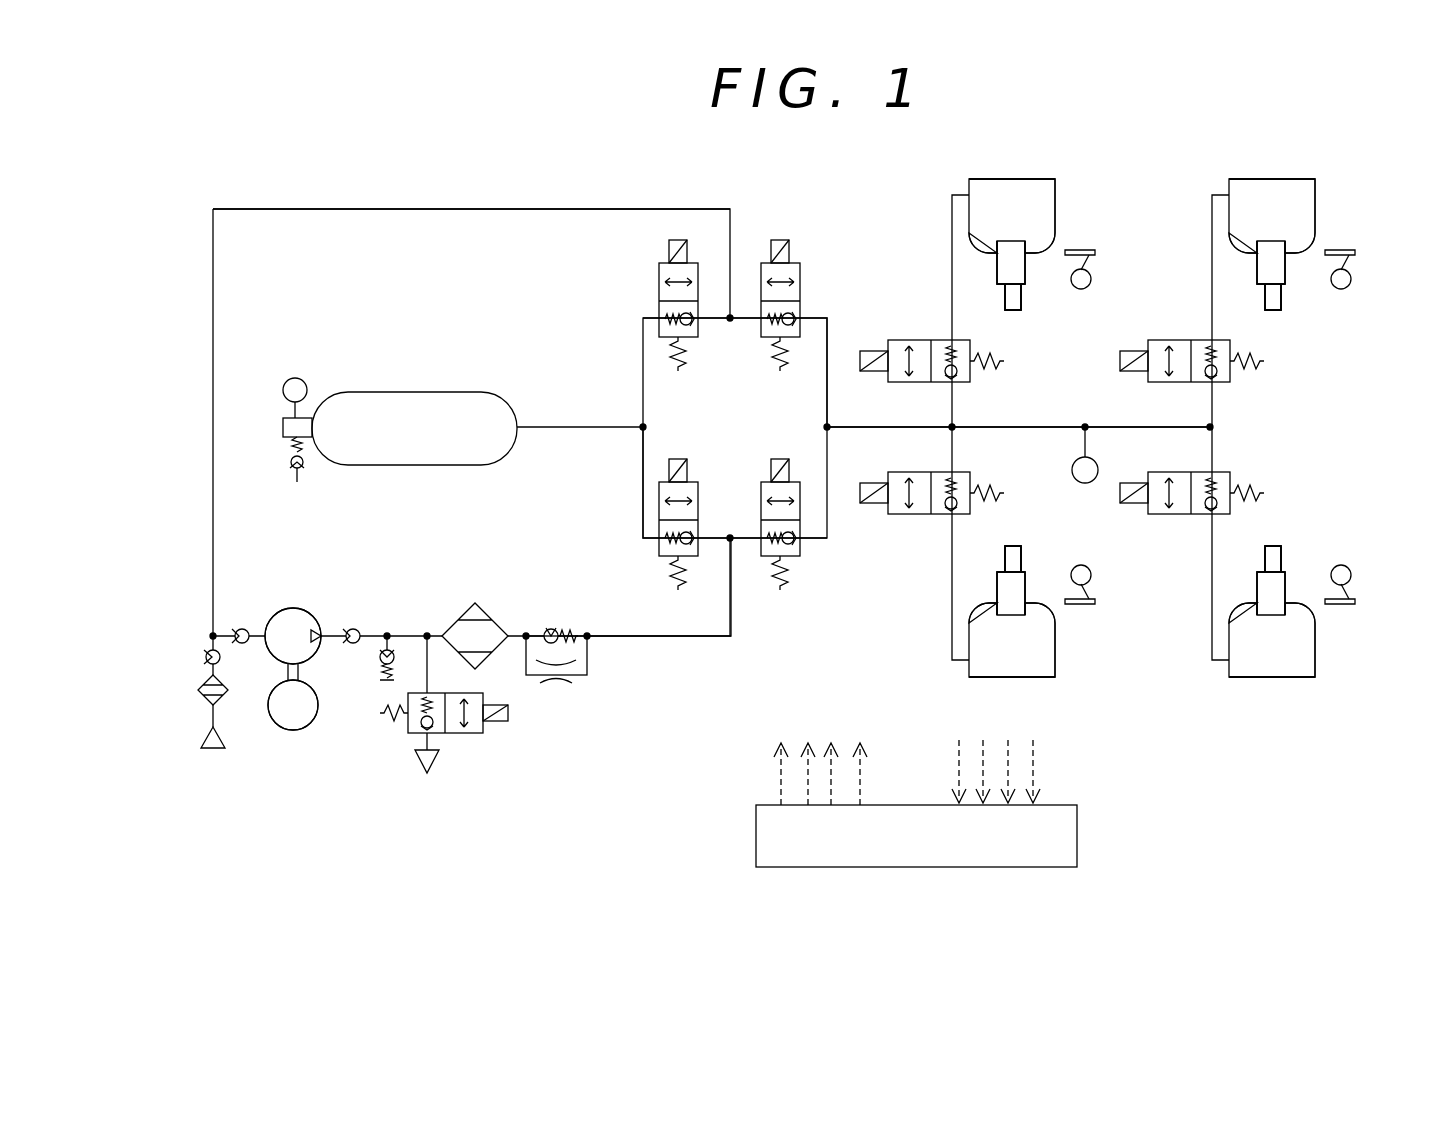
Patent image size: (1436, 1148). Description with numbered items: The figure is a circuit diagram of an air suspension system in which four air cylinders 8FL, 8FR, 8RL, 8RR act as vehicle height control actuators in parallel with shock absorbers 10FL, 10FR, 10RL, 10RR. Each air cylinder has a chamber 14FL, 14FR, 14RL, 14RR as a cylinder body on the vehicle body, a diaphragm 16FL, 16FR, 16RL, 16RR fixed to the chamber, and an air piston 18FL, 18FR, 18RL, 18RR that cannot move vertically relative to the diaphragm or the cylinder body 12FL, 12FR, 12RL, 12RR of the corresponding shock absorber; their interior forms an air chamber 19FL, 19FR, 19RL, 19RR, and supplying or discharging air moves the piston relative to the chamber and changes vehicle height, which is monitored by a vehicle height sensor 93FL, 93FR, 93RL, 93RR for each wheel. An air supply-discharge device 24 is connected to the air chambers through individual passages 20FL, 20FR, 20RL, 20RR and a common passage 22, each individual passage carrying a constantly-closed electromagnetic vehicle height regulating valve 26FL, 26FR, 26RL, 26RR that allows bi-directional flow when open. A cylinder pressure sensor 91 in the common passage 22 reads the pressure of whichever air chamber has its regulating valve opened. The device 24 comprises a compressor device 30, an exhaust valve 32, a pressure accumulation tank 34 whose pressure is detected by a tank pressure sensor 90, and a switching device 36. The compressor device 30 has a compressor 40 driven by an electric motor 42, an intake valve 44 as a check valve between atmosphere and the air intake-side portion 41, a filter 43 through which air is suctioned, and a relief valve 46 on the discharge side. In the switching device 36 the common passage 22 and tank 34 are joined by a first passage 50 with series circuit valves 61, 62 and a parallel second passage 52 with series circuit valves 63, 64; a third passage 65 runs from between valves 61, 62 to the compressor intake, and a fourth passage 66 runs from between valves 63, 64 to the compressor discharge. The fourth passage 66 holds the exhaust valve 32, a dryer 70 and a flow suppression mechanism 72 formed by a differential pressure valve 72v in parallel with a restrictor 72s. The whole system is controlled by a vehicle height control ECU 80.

The air supply-discharge device 24 is at (496, 168).
The third passage 65 is at (607, 209).
The switching device 36 is at (752, 212).
The first passage 50 is at (643, 350).
The second passage 52 is at (643, 490).
The circuit valve 61 is at (659, 270).
The circuit valve 62 is at (800, 277).
The circuit valve 63 is at (698, 490).
The circuit valve 64 is at (800, 487).
The pressure accumulation tank 34 is at (465, 400).
The tank pressure sensor 90 is at (305, 378).
The compressor device 30 is at (287, 580).
The compressor 40 is at (283, 618).
The electric motor 42 is at (283, 718).
The air intake-side portion 41 is at (213, 634).
The intake valve 44 is at (210, 655).
The filter 43 is at (207, 688).
The relief valve 46 is at (385, 663).
The dryer 70 is at (458, 620).
The exhaust valve 32 is at (483, 728).
The flow suppression mechanism 72 is at (540, 620).
The differential pressure valve 72v is at (553, 628).
The restrictor 72s is at (560, 690).
The fourth passage 66 is at (655, 640).
The common passage 22 is at (873, 427).
The cylinder pressure sensor 91 is at (1072, 470).
The air cylinder 8FL is at (1056, 178).
The chamber 14FL is at (990, 179).
The air chamber 19FL is at (1019, 190).
The diaphragm 16FL is at (995, 253).
The air piston 18FL is at (1004, 273).
The cylinder body 12FL is at (1018, 296).
The shock absorber 10FL is at (1024, 318).
The vehicle height sensor 93FL is at (1080, 250).
The individual passage 20FL is at (952, 318).
The vehicle height regulating valve 26FL is at (968, 375).
The air cylinder 8FR is at (1056, 683).
The chamber 14FR is at (990, 677).
The air chamber 19FR is at (1013, 668).
The diaphragm 16FR is at (995, 603).
The air piston 18FR is at (1003, 585).
The cylinder body 12FR is at (1013, 560).
The shock absorber 10FR is at (1022, 540).
The vehicle height sensor 93FR is at (1068, 606).
The individual passage 20FR is at (952, 545).
The vehicle height regulating valve 26FR is at (960, 473).
The air cylinder 8RL is at (1316, 224).
The chamber 14RL is at (1241, 199).
The air chamber 19RL is at (1272, 160).
The diaphragm 16RL is at (1206, 262).
The air piston 18RL is at (1248, 303).
The cylinder body 12RL is at (1318, 304).
The shock absorber 10RL is at (1321, 298).
The vehicle height sensor 93RL is at (1353, 244).
The individual passage 20RL is at (1174, 311).
The vehicle height regulating valve 26RL is at (1202, 383).
The air cylinder 8RR is at (1316, 634).
The chamber 14RR is at (1238, 656).
The air chamber 19RR is at (1272, 699).
The diaphragm 16RR is at (1203, 593).
The air piston 18RR is at (1248, 554).
The cylinder body 12RR is at (1317, 554).
The shock absorber 10RR is at (1320, 556).
The vehicle height sensor 93RR is at (1350, 614).
The individual passage 20RR is at (1168, 543).
The vehicle height regulating valve 26RR is at (1201, 472).
The vehicle height control ECU 80 is at (916, 803).